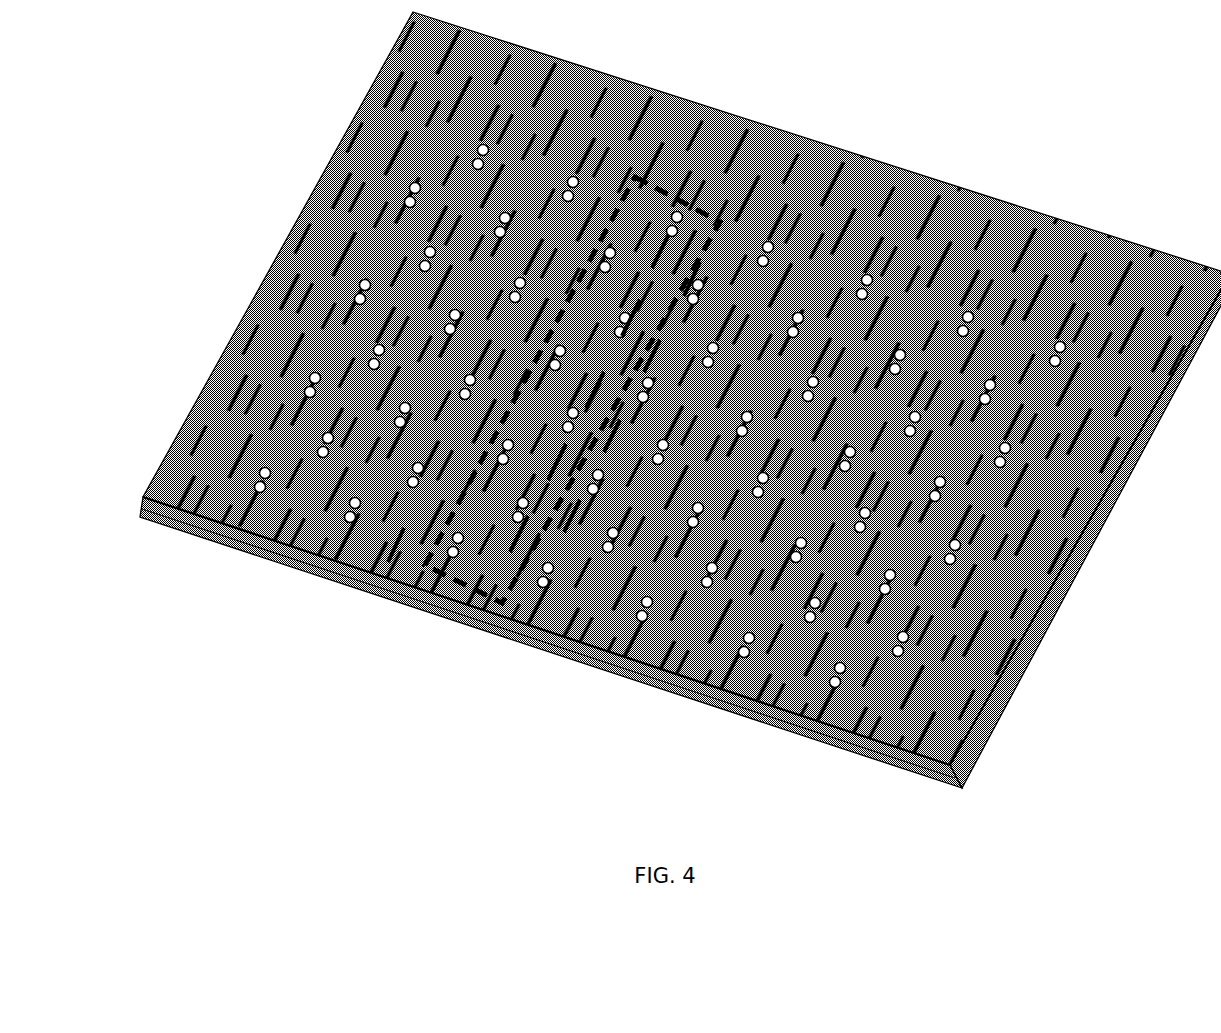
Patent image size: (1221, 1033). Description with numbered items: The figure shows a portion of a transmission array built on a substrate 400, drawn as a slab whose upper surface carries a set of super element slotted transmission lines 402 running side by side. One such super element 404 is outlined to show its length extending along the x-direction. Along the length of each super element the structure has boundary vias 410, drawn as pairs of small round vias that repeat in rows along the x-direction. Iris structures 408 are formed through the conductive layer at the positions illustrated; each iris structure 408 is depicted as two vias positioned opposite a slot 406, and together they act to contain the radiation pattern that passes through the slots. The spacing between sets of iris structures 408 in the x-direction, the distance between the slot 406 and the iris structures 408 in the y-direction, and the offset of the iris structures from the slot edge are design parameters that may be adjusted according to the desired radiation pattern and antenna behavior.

The substrate 400 is at (1030, 684).
The super element slotted transmission lines 402 is at (708, 209).
The super element 404 is at (470, 615).
The slot 406 is at (387, 570).
The iris structures 408 is at (350, 542).
The boundary vias 410 is at (229, 512).